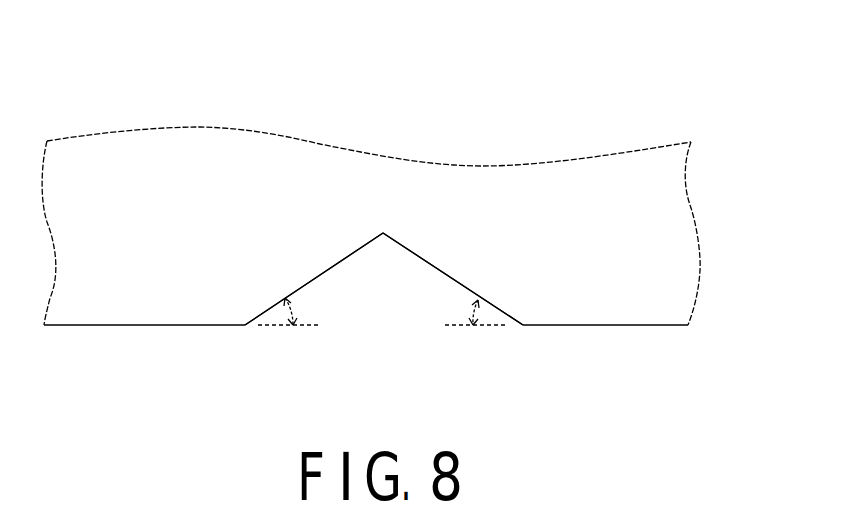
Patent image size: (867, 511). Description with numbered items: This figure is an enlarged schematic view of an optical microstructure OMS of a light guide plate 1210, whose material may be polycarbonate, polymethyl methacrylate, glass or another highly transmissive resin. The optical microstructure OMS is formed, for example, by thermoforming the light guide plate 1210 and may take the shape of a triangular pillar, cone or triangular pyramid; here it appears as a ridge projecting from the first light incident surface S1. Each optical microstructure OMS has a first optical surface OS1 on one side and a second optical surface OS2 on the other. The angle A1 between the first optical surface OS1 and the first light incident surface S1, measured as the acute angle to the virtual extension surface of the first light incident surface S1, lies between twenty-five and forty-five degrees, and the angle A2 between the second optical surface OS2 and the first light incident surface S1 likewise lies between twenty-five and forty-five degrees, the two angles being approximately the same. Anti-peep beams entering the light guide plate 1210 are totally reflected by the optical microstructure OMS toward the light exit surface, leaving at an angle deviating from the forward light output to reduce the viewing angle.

The light guide plate 1210 is at (658, 242).
The first light incident surface S1 is at (602, 326).
The optical microstructure OMS is at (412, 253).
The first optical surface OS1 is at (333, 265).
The second optical surface OS2 is at (430, 265).
The angle A1 is at (292, 312).
The angle A2 is at (471, 312).